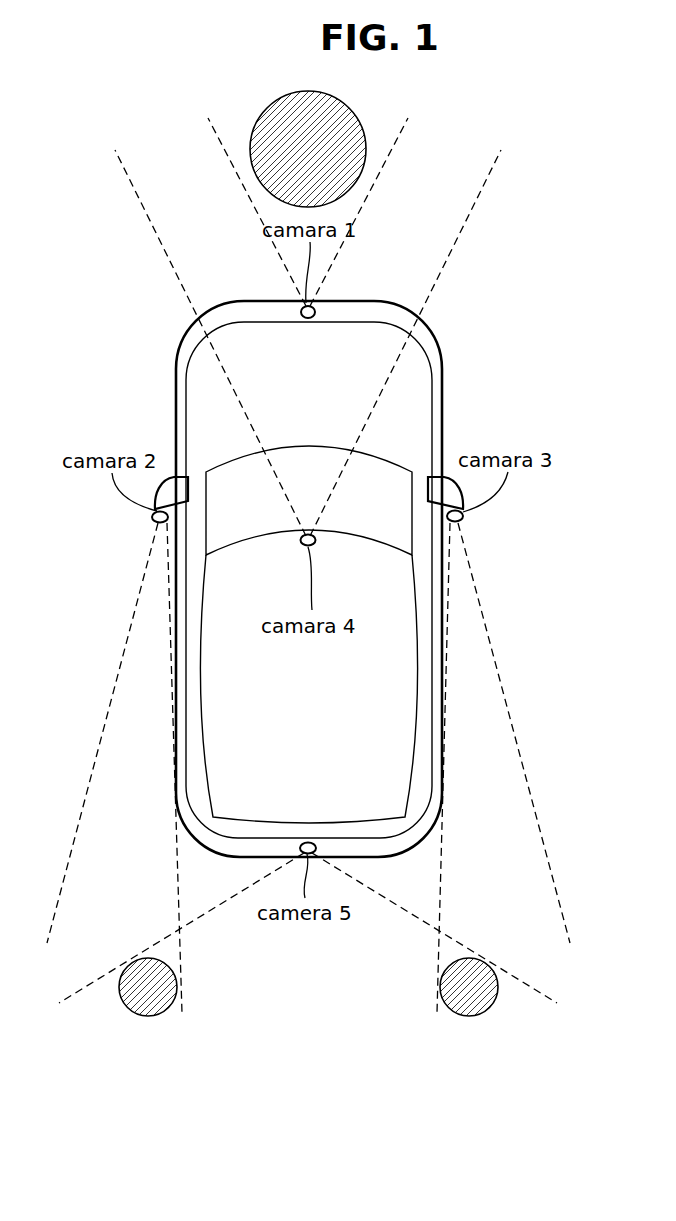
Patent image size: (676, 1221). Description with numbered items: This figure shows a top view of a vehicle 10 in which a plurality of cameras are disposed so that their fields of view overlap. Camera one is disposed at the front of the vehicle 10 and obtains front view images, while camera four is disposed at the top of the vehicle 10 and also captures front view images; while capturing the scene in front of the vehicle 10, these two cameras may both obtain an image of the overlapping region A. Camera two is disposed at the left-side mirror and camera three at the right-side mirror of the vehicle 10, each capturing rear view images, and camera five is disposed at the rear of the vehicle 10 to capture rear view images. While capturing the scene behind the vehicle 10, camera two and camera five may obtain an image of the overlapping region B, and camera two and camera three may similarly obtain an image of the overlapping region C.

The vehicle 10 is at (181, 347).
The overlapping region A is at (308, 149).
The overlapping region B is at (148, 987).
The overlapping region C is at (469, 987).